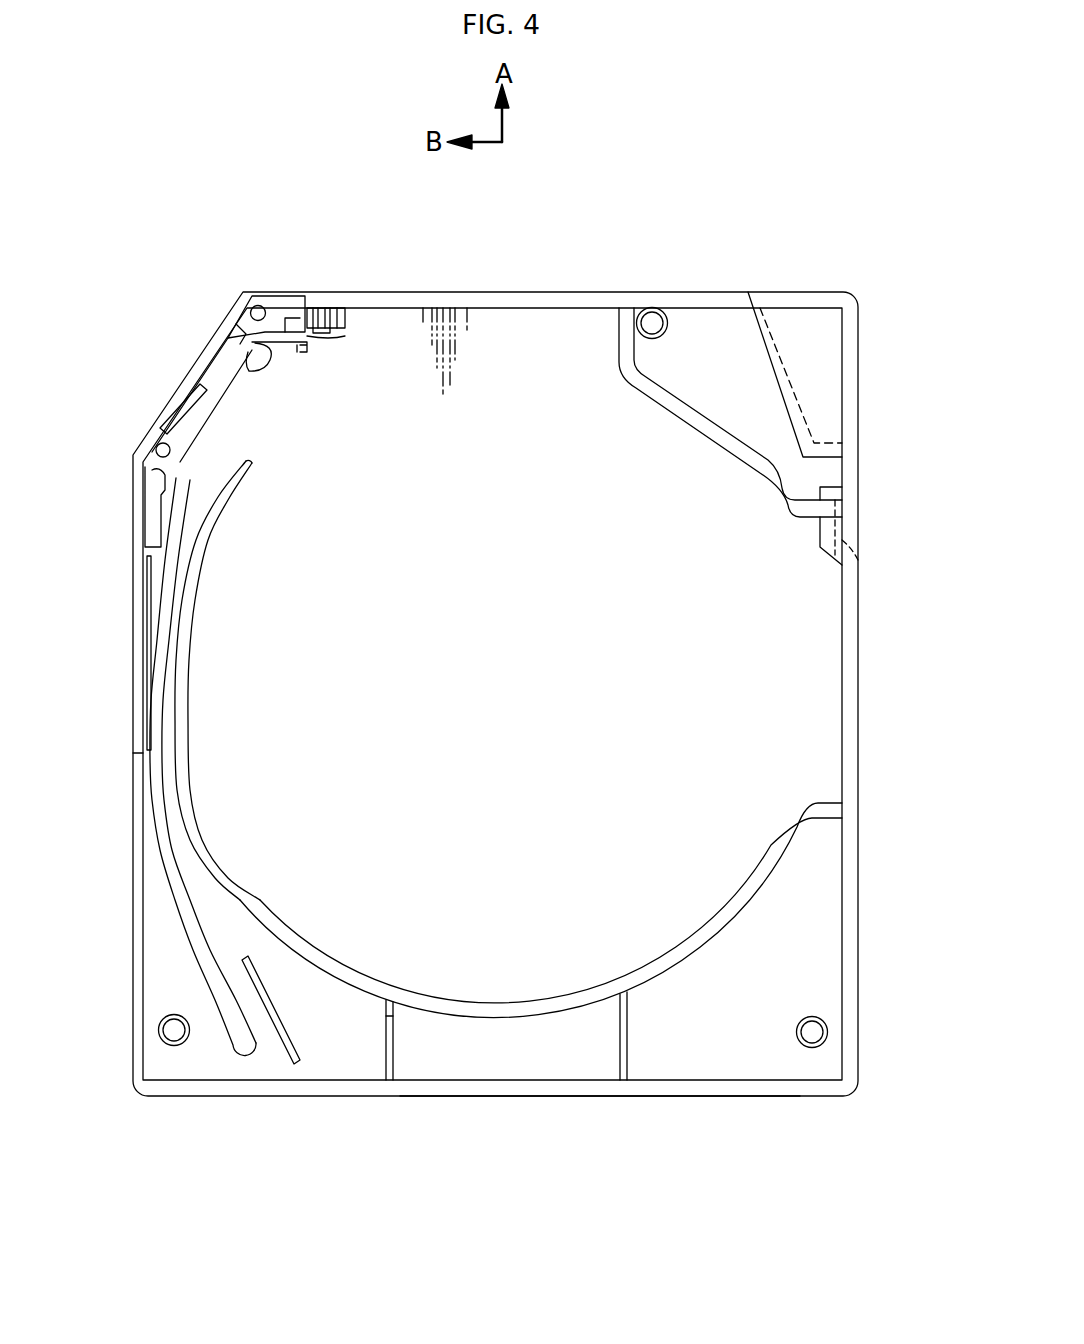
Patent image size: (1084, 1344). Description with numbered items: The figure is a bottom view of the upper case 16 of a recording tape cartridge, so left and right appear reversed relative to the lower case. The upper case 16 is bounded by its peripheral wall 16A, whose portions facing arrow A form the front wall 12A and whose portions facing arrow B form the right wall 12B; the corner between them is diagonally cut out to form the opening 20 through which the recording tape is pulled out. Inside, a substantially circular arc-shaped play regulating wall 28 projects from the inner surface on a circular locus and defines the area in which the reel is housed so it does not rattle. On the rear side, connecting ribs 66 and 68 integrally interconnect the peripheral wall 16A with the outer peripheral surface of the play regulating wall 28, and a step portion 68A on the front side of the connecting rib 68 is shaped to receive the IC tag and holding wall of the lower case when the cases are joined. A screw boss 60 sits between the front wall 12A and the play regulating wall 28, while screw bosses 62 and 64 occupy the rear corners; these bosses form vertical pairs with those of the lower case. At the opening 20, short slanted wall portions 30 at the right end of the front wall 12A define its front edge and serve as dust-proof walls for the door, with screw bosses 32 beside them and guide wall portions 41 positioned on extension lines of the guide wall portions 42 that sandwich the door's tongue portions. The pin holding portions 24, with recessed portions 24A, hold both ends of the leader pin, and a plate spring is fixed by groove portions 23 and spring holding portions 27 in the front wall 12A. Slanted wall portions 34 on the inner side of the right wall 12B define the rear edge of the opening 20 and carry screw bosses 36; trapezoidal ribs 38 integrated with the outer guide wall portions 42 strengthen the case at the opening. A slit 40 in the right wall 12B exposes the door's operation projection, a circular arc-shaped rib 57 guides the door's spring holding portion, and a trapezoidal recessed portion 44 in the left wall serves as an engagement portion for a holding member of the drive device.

The upper case 16 is at (610, 216).
The front wall 12A is at (514, 292).
The right wall 12B is at (128, 772).
The peripheral wall 16A is at (738, 1098).
The play regulating wall 28 is at (298, 928).
The screw boss 60 is at (668, 322).
The screw boss 62 is at (828, 1030).
The screw boss 64 is at (158, 1032).
The recessed portion 44 is at (860, 528).
The groove portions 23 is at (308, 312).
The spring holding portions 27 is at (338, 335).
The opening 20 is at (195, 350).
The slanted wall portions 30 is at (236, 318).
The screw bosses 32 is at (257, 305).
The guide wall portions 41 is at (232, 332).
The pin holding portions 24 is at (270, 365).
The recessed portions 24A is at (257, 368).
The ribs 38 is at (170, 392).
The screw bosses 36 is at (157, 447).
The slanted wall portions 34 is at (178, 503).
The slit 40 is at (132, 678).
The guide wall portions 42 is at (190, 962).
The rib 57 is at (290, 1020).
The connecting rib 68 is at (385, 1058).
The step portion 68A is at (395, 1012).
The connecting rib 66 is at (628, 1050).